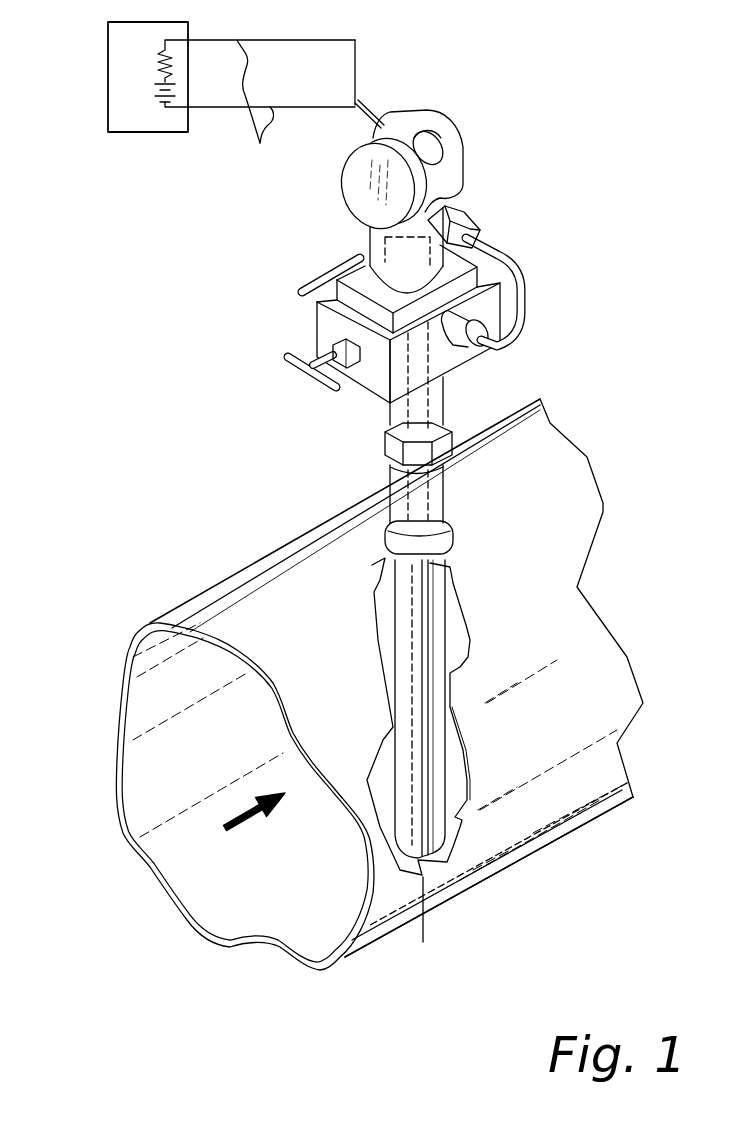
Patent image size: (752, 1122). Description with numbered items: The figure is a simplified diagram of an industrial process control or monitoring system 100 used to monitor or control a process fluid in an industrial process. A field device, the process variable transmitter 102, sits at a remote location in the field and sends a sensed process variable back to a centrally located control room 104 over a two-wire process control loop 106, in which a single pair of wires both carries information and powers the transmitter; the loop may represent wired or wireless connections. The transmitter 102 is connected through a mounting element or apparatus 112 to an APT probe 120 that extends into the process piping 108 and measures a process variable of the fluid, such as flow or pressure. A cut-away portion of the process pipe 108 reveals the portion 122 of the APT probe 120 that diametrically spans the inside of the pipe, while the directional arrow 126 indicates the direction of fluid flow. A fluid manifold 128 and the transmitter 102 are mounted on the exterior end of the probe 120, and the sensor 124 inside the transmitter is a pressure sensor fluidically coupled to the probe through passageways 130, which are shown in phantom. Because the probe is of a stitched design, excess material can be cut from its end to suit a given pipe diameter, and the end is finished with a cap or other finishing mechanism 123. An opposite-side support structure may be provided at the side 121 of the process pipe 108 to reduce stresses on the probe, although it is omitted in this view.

The industrial process control or monitoring system 100 is at (540, 241).
The process variable transmitter 102 is at (453, 167).
The control room 104 is at (108, 72).
The two-wire process control loop 106 is at (271, 111).
The process piping 108 is at (125, 692).
The mounting element 112 is at (392, 478).
The APT probe 120 is at (458, 497).
The side of process pipe 121 is at (452, 906).
The portion of APT probe 122 is at (387, 632).
The cap or finishing mechanism 123 is at (438, 927).
The sensor 124 is at (360, 245).
The directional arrow 126 is at (243, 818).
The fluid manifold 128 is at (517, 305).
The passageways 130 is at (393, 428).